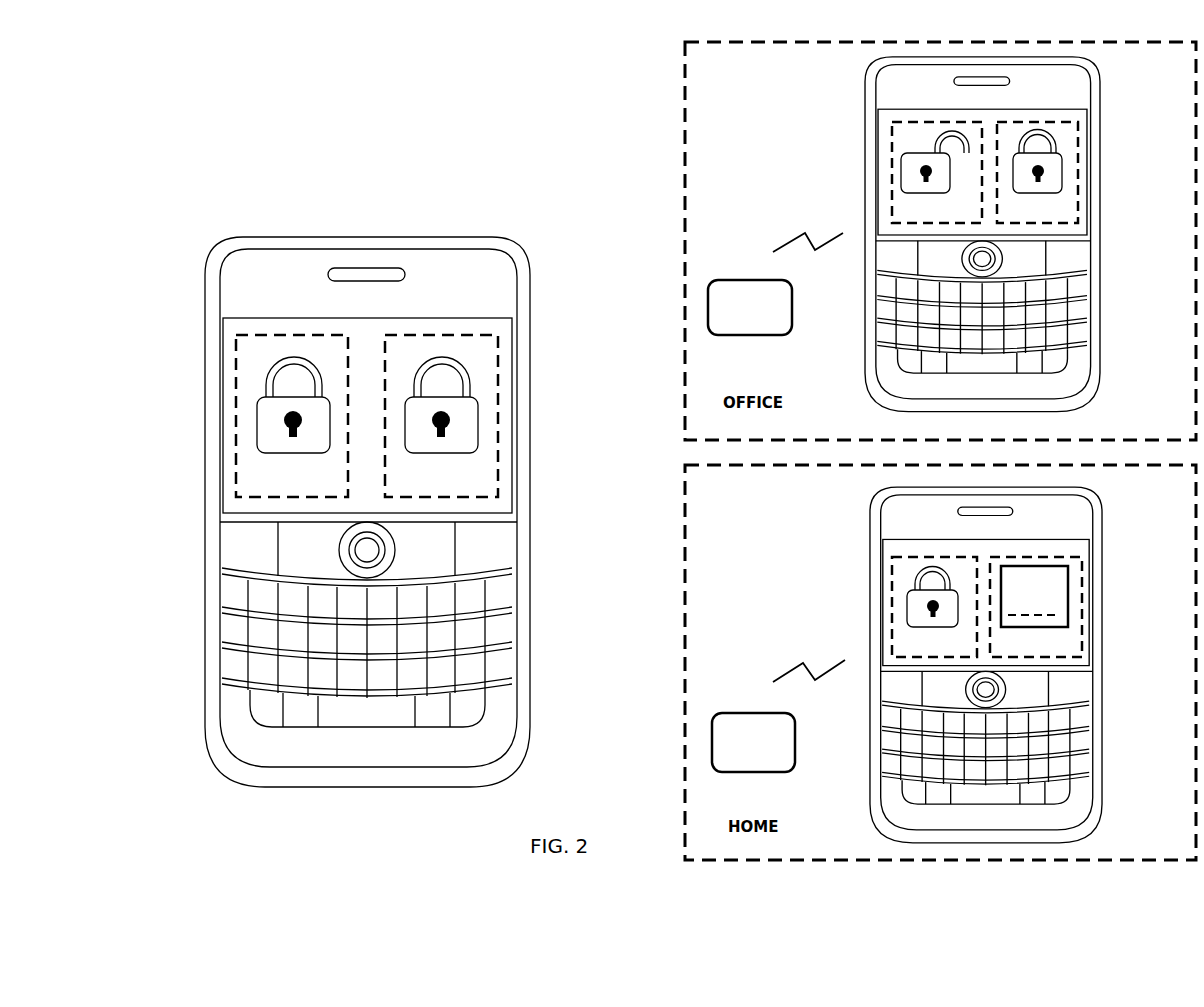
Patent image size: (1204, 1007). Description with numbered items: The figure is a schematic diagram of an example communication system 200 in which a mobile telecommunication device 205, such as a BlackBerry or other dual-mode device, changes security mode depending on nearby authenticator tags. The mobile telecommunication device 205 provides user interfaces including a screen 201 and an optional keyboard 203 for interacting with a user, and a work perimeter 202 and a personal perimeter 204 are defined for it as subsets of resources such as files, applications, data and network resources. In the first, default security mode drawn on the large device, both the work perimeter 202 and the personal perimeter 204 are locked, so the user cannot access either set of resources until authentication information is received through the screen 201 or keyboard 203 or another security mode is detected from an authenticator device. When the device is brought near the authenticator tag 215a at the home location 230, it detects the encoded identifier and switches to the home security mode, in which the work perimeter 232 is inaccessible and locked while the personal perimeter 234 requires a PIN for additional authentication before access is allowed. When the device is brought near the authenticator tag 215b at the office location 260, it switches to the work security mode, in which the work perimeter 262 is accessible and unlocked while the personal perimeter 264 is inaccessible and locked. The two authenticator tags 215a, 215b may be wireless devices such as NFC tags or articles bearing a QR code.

The communication system 200 is at (206, 110).
The mobile telecommunication device 205 is at (290, 237).
The screen 201 is at (249, 327).
The work perimeter 202 is at (256, 410).
The personal perimeter 204 is at (485, 421).
The keyboard 203 is at (230, 616).
The office location 260 is at (785, 125).
The work perimeter 262 is at (900, 168).
The personal perimeter 264 is at (1078, 174).
The authenticator tag 215b is at (732, 320).
The home location 230 is at (785, 555).
The work perimeter 232 is at (905, 604).
The personal perimeter 234 is at (1080, 609).
The authenticator tag 215a is at (734, 753).